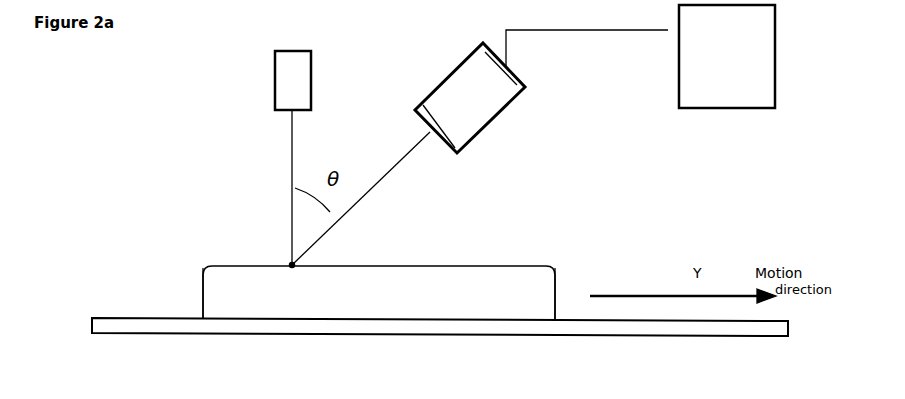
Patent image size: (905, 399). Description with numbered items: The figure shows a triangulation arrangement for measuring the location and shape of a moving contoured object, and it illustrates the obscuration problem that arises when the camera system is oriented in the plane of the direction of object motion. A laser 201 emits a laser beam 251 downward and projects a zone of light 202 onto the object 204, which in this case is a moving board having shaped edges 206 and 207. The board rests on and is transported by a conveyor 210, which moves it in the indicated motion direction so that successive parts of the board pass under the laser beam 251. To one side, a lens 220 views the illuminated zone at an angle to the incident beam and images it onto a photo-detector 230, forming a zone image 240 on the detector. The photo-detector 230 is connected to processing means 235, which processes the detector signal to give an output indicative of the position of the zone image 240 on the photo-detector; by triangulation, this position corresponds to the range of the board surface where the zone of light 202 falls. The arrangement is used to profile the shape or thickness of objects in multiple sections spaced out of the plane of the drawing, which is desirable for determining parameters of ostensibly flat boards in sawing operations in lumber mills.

The laser 201 is at (312, 58).
The laser beam 251 is at (291, 131).
The zone of light 202 is at (290, 263).
The object 204 is at (379, 293).
The shaped edge 207 is at (203, 268).
The shaped edge 206 is at (557, 268).
The conveyor 210 is at (620, 328).
The lens 220 is at (463, 135).
The photo-detector 230 is at (525, 96).
The zone image 240 is at (516, 73).
The processing means 235 is at (727, 56).